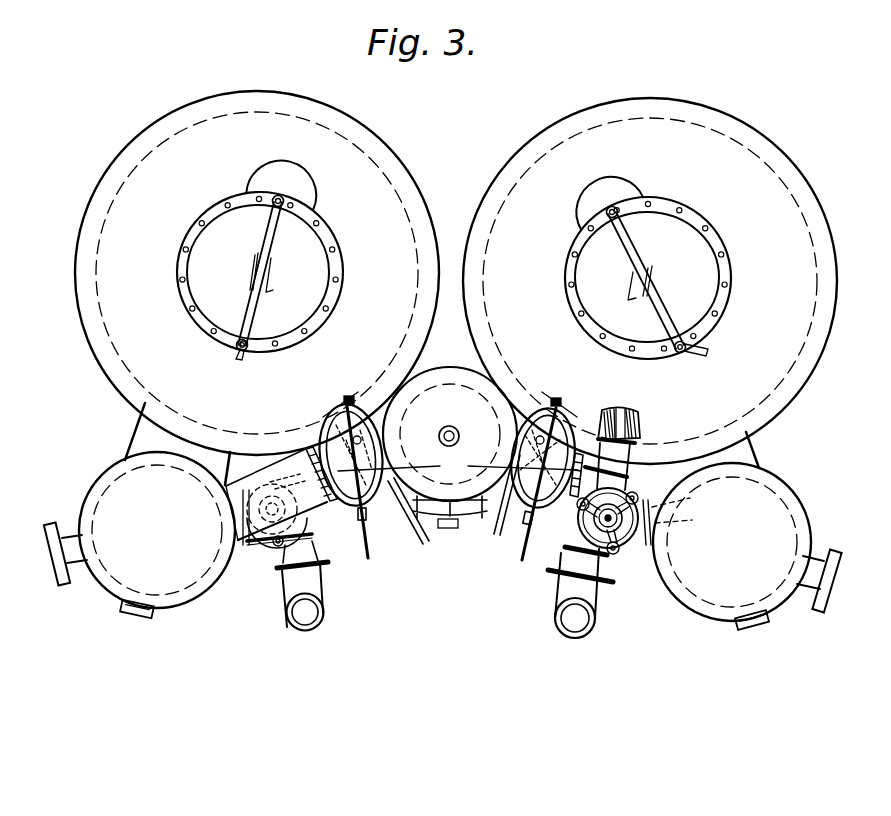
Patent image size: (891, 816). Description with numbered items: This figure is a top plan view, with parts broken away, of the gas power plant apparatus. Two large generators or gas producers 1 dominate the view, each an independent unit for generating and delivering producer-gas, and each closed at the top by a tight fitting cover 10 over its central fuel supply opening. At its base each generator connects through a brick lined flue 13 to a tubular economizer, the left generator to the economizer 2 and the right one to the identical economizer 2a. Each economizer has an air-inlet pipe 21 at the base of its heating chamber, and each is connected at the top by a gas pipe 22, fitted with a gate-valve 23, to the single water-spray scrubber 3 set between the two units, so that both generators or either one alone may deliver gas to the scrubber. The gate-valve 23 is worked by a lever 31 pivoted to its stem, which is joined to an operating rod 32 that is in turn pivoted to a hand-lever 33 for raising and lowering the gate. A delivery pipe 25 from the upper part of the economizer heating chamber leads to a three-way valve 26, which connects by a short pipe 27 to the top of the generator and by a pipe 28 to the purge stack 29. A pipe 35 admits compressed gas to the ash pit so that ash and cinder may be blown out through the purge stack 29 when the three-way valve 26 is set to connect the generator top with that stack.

The generator 1 is at (96, 181).
The cover 10 is at (454, 260).
The flue 13 is at (144, 436).
The economizer 2 is at (96, 497).
The economizer 2a is at (786, 506).
The air-inlet pipe 21 is at (66, 585).
The gas pipe 22 is at (324, 498).
The valve 23 is at (376, 492).
The delivery pipe 25 is at (660, 515).
The three-way valve 26 is at (275, 548).
The short pipe 27 is at (302, 460).
The pipe 28 is at (312, 576).
The purge stack 29 is at (325, 612).
The water-spray scrubber 3 is at (450, 434).
The lever 31 is at (458, 464).
The operating rod 32 is at (361, 521).
The hand-lever 33 is at (370, 556).
The pipe 35 is at (500, 527).